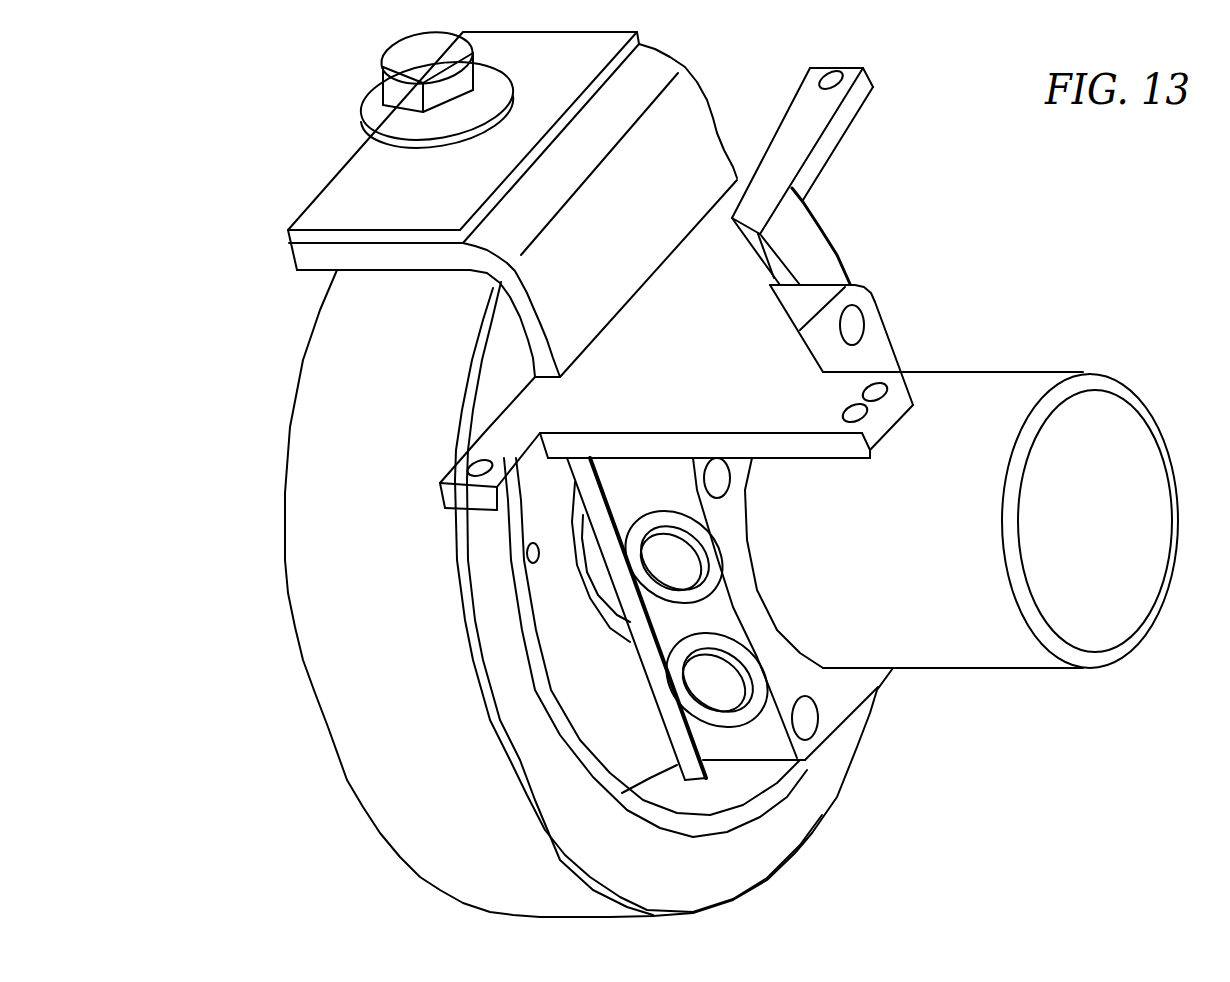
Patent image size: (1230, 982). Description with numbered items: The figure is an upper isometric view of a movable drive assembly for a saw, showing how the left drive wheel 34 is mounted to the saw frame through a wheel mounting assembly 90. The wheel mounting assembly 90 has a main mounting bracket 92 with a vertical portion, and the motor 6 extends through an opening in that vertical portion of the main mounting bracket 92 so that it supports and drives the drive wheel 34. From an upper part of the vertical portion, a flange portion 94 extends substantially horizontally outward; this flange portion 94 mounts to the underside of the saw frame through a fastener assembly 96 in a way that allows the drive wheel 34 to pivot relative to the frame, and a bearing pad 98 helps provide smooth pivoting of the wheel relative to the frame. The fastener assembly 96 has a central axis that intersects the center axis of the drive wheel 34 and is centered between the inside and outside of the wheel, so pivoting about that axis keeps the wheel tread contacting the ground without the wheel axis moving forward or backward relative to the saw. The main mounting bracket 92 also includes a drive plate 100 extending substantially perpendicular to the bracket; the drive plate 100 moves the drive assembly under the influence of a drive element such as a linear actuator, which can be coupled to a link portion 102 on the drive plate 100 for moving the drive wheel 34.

The motor 6 is at (1000, 555).
The drive wheel 34 is at (589, 593).
The wheel mounting assembly 90 is at (722, 399).
The main mounting bracket 92 is at (711, 210).
The flange portion 94 is at (380, 303).
The fastener assembly 96 is at (359, 88).
The bearing pad 98 is at (419, 137).
The drive plate 100 is at (866, 236).
The link portion 102 is at (750, 420).